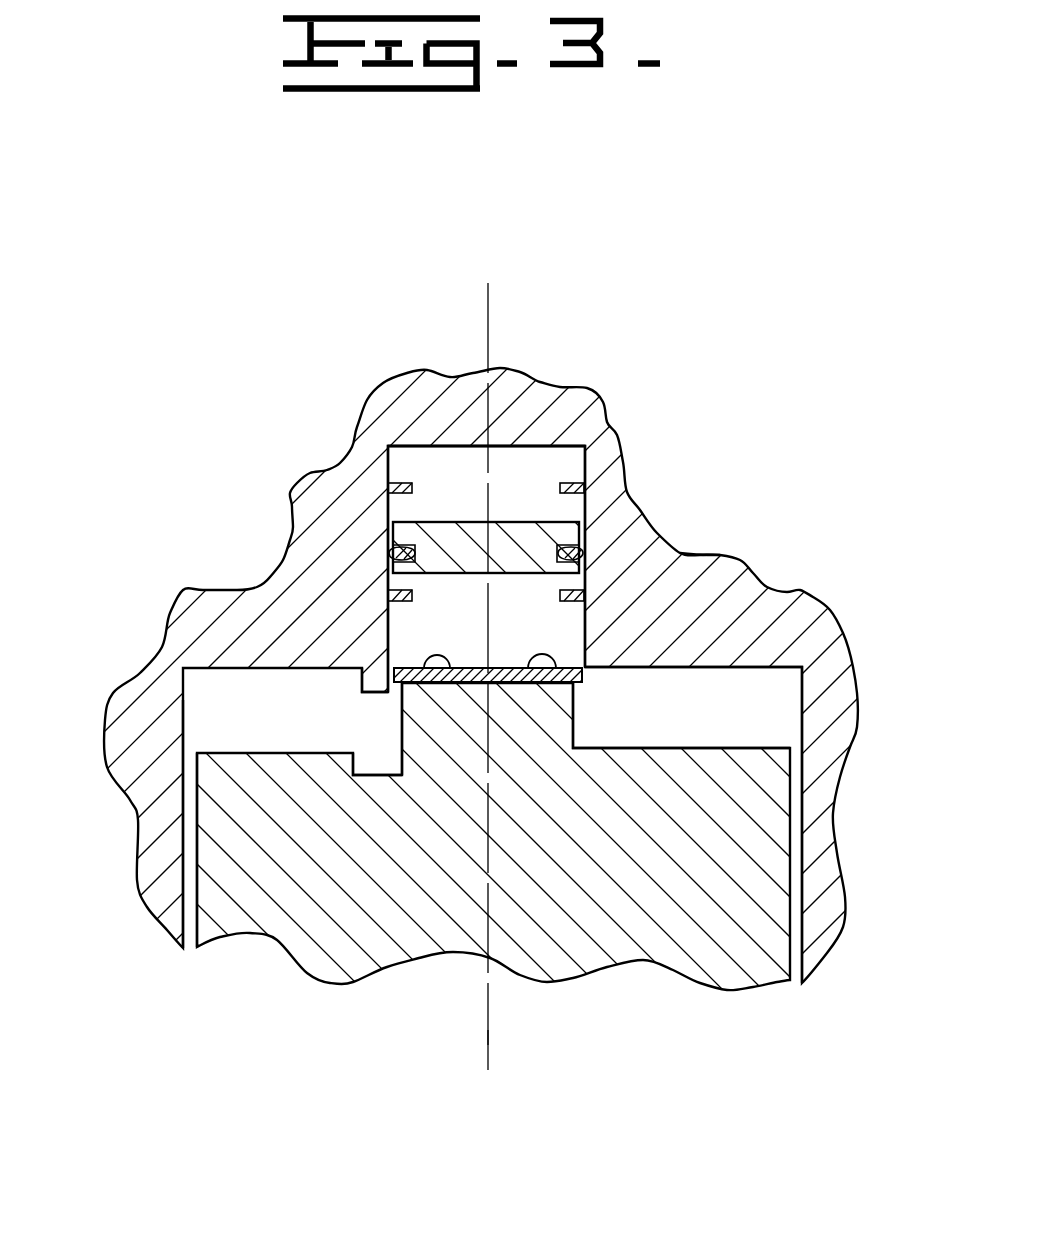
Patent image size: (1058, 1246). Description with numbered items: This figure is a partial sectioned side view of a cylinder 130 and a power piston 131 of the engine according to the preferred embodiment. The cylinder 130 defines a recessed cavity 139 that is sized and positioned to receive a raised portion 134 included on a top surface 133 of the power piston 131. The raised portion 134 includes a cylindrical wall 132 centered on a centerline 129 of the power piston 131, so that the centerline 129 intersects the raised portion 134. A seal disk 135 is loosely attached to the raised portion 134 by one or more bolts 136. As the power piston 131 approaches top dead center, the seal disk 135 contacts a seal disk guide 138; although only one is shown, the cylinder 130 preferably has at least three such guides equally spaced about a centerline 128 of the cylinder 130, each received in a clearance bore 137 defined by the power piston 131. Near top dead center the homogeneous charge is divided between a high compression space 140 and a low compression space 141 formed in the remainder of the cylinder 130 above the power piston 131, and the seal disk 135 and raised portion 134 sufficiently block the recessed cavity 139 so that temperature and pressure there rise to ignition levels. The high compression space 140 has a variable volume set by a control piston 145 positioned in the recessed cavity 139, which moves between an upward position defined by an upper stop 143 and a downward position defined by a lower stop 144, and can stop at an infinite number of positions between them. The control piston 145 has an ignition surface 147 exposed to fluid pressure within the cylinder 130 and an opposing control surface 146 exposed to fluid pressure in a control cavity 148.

The centerline of cylinder 128 is at (490, 998).
The centerline of power piston 129 is at (490, 1038).
The cylinder 130 is at (803, 722).
The power piston 131 is at (790, 842).
The cylindrical wall 132 is at (573, 738).
The top surface 133 is at (220, 752).
The raised portion 134 is at (401, 737).
The seal disk 135 is at (583, 673).
The bolts 136 is at (547, 660).
The clearance bore 137 is at (363, 758).
The seal disk guide 138 is at (374, 682).
The recessed cavity 139 is at (700, 555).
The high compression space 140 is at (560, 620).
The low compression space 141 is at (780, 680).
The upper stop 143 is at (562, 483).
The lower stop 144 is at (420, 576).
The control piston 145 is at (533, 540).
The control surface 146 is at (443, 523).
The ignition surface 147 is at (388, 598).
The control cavity 148 is at (475, 489).